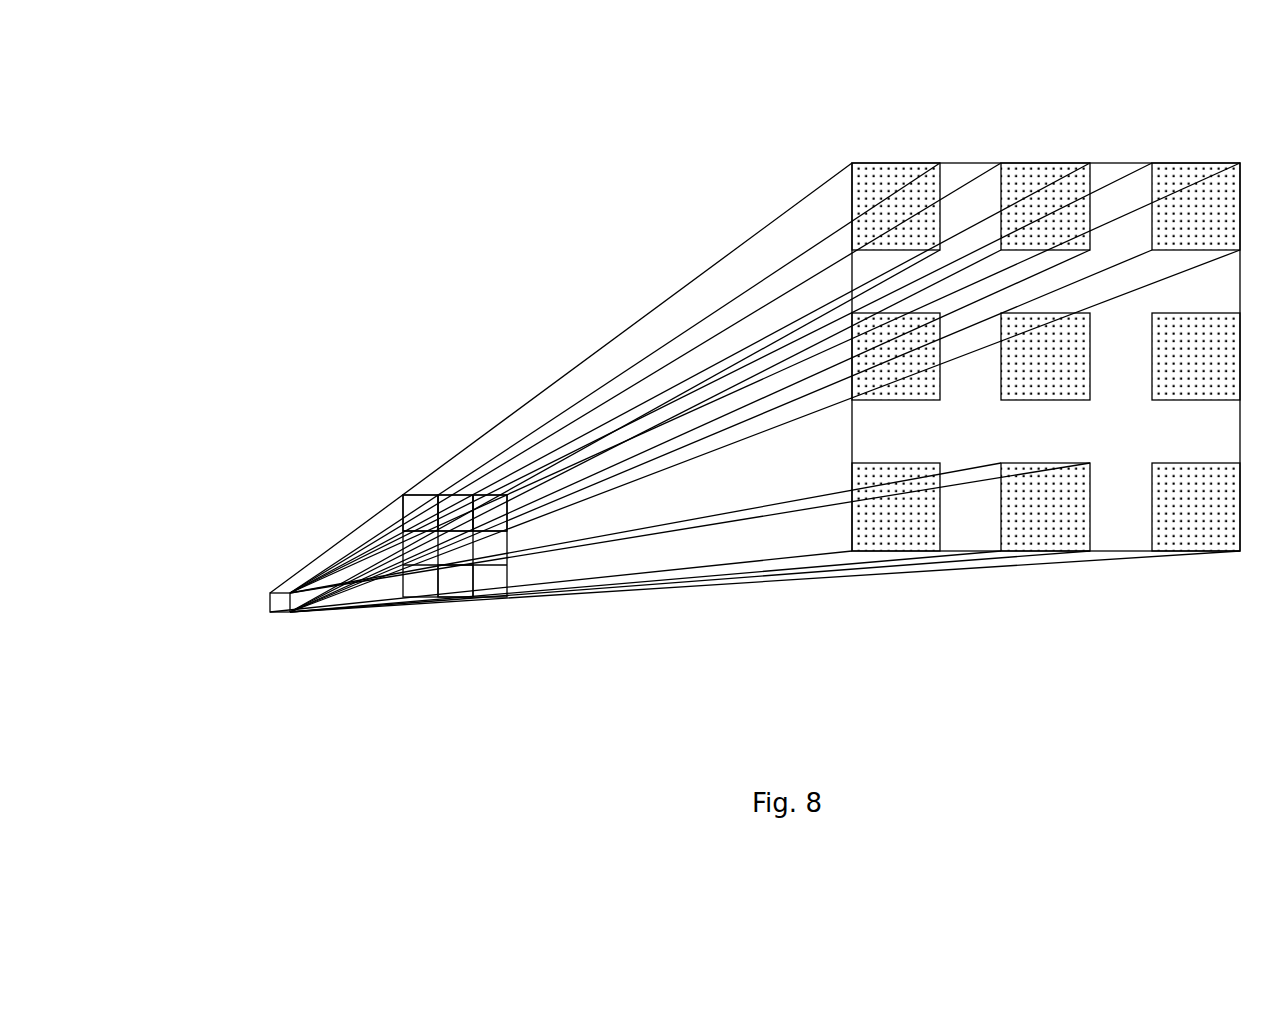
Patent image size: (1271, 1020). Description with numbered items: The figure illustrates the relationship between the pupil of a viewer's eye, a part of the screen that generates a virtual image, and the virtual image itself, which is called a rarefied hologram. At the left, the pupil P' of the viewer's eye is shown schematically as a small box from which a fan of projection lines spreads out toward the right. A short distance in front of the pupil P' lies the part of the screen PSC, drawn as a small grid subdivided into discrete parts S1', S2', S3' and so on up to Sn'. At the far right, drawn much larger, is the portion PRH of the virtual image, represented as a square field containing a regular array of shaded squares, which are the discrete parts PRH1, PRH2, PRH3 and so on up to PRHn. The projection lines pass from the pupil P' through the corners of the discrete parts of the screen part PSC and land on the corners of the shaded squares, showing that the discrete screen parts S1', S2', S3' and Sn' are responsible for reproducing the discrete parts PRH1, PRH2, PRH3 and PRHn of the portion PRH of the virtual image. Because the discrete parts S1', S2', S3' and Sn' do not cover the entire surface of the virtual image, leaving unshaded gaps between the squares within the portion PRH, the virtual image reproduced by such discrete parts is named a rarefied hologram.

The pupil of the viewer's eye P' is at (255, 559).
The part of the screen PSC is at (412, 490).
The first discrete part of the screen S1' is at (350, 469).
The second discrete part of the screen S2' is at (445, 442).
The third discrete part of the screen S3' is at (496, 437).
The n-th discrete part of the screen Sn' is at (458, 624).
The portion of the virtual image PRH is at (848, 175).
The first discrete part of the virtual image portion PRH1 is at (890, 180).
The second discrete part of the virtual image portion PRH2 is at (1025, 180).
The third discrete part of the virtual image portion PRH3 is at (1177, 182).
The n-th discrete part of the virtual image portion PRHn is at (1057, 520).